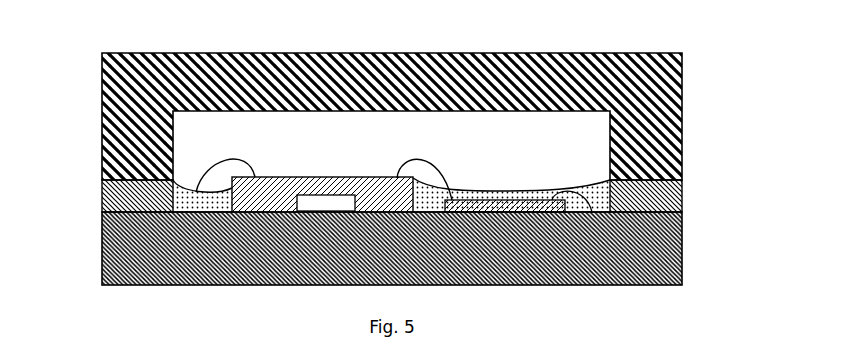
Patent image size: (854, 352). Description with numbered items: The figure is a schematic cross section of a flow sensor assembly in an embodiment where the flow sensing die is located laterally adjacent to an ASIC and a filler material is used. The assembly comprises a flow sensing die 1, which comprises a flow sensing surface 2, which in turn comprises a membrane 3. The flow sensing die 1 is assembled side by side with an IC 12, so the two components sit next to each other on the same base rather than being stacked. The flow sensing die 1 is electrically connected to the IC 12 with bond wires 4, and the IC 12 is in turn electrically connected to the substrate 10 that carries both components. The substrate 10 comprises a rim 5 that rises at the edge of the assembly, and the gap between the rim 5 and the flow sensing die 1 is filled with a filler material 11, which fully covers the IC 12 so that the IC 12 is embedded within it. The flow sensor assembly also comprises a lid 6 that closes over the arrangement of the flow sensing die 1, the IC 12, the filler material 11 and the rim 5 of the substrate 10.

The flow sensing die 1 is at (251, 201).
The flow sensing surface 2 is at (264, 174).
The membrane 3 is at (328, 174).
The bond wires 4 is at (416, 157).
The rim 5 is at (658, 203).
The lid 6 is at (133, 113).
The substrate 10 is at (583, 261).
The filler material 11 is at (184, 201).
The IC 12 is at (473, 204).